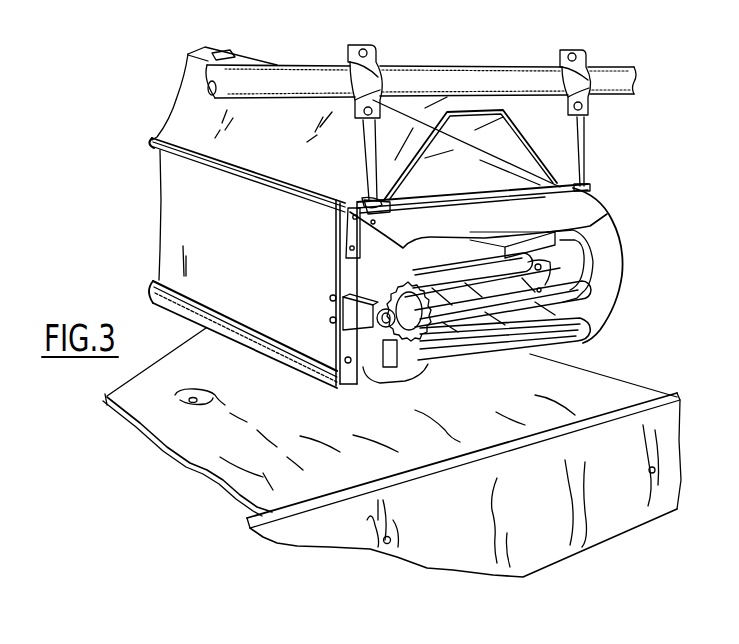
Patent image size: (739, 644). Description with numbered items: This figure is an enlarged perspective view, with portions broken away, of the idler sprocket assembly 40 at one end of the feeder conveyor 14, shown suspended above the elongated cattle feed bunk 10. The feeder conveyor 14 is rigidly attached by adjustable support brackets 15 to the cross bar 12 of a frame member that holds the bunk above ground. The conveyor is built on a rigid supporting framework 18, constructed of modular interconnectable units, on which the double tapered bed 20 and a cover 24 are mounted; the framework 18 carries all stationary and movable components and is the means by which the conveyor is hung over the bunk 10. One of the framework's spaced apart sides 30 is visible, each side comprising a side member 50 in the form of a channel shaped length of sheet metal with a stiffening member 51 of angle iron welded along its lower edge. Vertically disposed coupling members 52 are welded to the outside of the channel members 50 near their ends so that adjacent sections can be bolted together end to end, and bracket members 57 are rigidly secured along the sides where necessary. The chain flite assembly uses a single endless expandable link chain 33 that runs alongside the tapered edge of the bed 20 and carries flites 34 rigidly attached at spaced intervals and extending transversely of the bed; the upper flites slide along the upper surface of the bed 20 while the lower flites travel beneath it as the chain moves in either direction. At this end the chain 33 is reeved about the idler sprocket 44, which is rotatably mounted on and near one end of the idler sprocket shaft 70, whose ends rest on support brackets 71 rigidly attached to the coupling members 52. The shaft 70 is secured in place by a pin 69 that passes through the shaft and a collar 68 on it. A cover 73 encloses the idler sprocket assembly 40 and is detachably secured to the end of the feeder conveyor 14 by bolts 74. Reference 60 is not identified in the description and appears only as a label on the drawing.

The feed bunk 10 is at (598, 513).
The cross bar 12 is at (302, 70).
The feeder conveyor 14 is at (192, 216).
The adjustable support brackets 15 is at (352, 50).
The supporting framework 18 is at (186, 315).
The double tapered bed 20 is at (538, 240).
The cover 24 is at (229, 57).
The side 30 is at (175, 228).
The chain 33 is at (430, 327).
The flites 34 is at (487, 323).
The idler sprocket assembly 40 is at (640, 250).
The idler sprocket 44 is at (413, 280).
The side member 50 is at (180, 183).
The stiffening member 51 is at (250, 340).
The coupling members 52 is at (330, 320).
The bracket members 57 is at (345, 238).
The top frame rail 60 is at (340, 192).
The collar 68 is at (357, 366).
The pin 69 is at (388, 293).
The idler sprocket shaft 70 is at (585, 294).
The support brackets 71 is at (603, 293).
The cover 73 is at (580, 337).
The bolts 74 is at (340, 257).